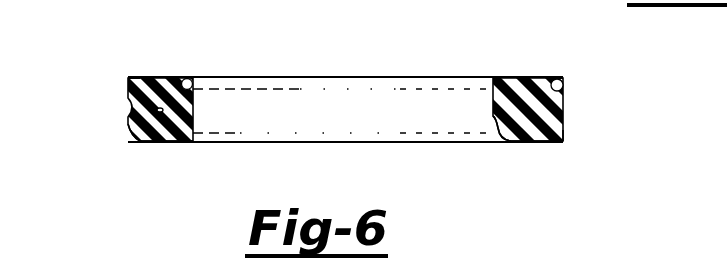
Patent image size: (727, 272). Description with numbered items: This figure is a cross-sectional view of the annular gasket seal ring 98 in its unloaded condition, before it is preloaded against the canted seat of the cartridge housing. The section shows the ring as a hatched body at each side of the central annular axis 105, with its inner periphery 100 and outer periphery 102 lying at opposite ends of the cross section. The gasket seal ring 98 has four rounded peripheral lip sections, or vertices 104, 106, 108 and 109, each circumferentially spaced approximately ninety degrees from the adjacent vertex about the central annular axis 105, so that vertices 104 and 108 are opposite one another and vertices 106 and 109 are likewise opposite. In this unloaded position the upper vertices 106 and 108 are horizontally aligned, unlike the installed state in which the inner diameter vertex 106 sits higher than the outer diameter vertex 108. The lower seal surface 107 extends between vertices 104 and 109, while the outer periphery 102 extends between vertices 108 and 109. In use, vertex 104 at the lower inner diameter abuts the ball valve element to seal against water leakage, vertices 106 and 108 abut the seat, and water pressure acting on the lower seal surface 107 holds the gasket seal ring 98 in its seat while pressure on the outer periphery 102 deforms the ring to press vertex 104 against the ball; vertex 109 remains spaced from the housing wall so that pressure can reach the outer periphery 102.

The gasket seal ring 98 is at (164, 66).
The inner periphery 100 is at (192, 113).
The outer periphery 102 is at (130, 107).
The vertex 104 is at (187, 140).
The central annular axis 105 is at (192, 126).
The vertex 106 is at (185, 78).
The lower seal surface 107 is at (157, 142).
The vertex 108 is at (133, 78).
The vertex 109 is at (130, 140).